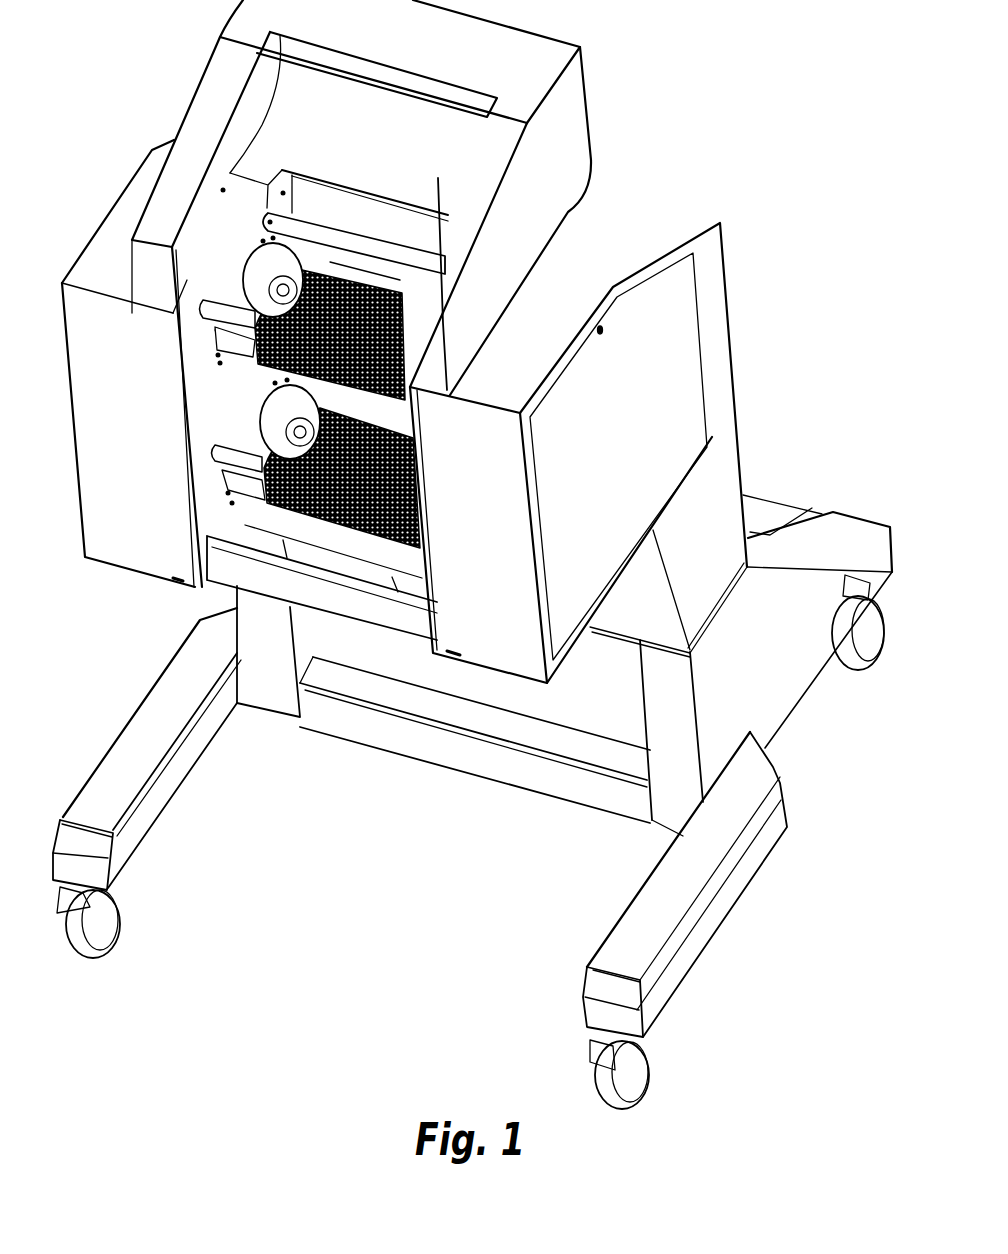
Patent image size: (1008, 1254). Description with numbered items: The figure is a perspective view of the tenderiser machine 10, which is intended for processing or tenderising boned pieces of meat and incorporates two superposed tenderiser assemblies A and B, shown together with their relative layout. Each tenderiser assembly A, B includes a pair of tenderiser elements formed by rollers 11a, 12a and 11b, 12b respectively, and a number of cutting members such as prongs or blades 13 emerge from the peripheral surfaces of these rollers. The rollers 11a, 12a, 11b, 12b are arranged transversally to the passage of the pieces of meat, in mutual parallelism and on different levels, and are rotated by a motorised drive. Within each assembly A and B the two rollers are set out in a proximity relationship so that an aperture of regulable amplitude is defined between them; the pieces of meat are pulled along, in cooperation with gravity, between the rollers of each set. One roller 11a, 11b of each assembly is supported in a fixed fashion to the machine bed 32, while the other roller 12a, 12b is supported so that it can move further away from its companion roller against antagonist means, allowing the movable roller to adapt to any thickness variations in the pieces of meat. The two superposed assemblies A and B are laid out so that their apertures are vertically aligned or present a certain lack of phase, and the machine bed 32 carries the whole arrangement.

The machine 10 is at (668, 136).
The roller 11a is at (270, 378).
The roller 11b is at (383, 540).
The roller 12a is at (398, 300).
The roller 12b is at (393, 427).
The prongs or blades 13 is at (345, 262).
The machine bed 32 is at (730, 450).
The tenderiser assembly A is at (371, 262).
The tenderiser assembly B is at (312, 532).